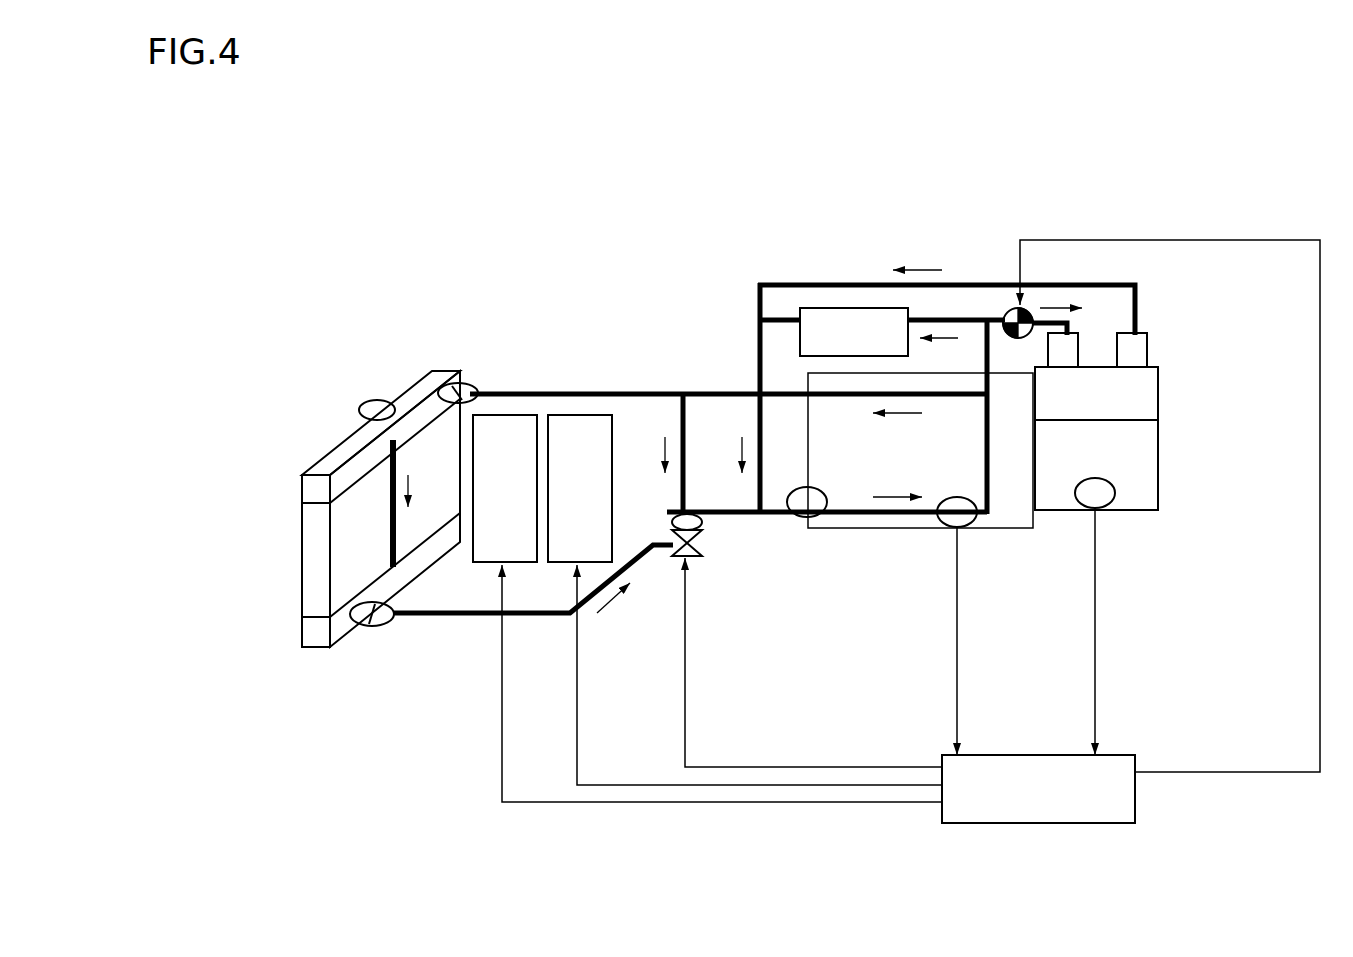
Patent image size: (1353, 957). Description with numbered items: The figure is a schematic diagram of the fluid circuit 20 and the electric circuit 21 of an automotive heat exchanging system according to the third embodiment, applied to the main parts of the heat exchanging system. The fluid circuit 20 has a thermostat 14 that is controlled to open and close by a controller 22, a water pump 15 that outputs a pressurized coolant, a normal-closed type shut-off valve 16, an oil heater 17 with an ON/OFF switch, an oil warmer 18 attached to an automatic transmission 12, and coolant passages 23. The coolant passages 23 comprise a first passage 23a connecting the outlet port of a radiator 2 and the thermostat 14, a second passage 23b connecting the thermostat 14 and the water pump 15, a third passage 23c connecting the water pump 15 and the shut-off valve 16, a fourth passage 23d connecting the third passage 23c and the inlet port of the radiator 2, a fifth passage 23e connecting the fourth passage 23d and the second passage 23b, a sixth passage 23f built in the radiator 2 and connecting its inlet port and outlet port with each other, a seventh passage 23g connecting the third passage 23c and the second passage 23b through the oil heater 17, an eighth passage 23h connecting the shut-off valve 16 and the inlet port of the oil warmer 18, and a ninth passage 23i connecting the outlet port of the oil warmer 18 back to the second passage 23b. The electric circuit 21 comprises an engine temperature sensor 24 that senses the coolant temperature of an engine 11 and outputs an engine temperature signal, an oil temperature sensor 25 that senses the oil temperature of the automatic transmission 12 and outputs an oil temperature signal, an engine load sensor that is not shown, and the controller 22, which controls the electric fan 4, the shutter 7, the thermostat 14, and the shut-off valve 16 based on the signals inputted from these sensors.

The radiator 2 is at (347, 448).
The electric fan 4 is at (612, 488).
The shutter 7 is at (517, 562).
The engine 11 is at (995, 520).
The automatic transmission 12 is at (1130, 482).
The thermostat 14 is at (699, 540).
The water pump 15 is at (800, 525).
The normal-closed type shut-off valve 16 is at (998, 312).
The oil heater 17 is at (845, 307).
The oil warmer 18 is at (1132, 385).
The fluid circuit 20 is at (767, 265).
The electric circuit 21 is at (817, 814).
The controller 22 is at (1135, 788).
The coolant passages 23 is at (556, 338).
The first passage 23a is at (437, 615).
The second passage 23b is at (732, 515).
The third passage 23c is at (867, 520).
The fourth passage 23d is at (720, 393).
The fifth passage 23e is at (683, 457).
The sixth passage 23f is at (390, 532).
The seventh passage 23g is at (988, 318).
The eighth passage 23h is at (1050, 322).
The ninth passage 23i is at (1035, 283).
The engine temperature sensor 24 is at (940, 523).
The oil temperature sensor 25 is at (1115, 490).